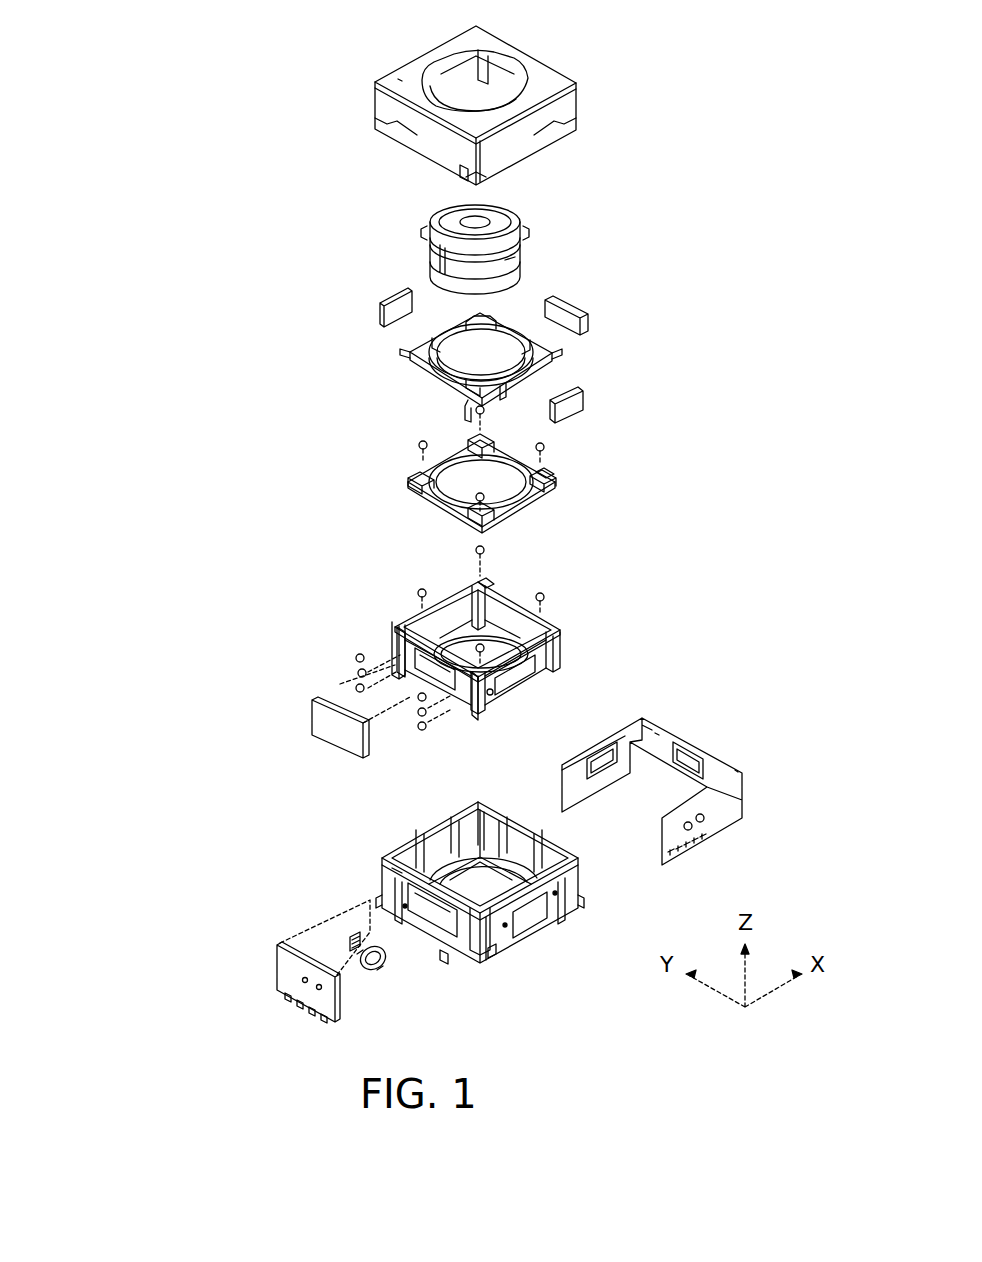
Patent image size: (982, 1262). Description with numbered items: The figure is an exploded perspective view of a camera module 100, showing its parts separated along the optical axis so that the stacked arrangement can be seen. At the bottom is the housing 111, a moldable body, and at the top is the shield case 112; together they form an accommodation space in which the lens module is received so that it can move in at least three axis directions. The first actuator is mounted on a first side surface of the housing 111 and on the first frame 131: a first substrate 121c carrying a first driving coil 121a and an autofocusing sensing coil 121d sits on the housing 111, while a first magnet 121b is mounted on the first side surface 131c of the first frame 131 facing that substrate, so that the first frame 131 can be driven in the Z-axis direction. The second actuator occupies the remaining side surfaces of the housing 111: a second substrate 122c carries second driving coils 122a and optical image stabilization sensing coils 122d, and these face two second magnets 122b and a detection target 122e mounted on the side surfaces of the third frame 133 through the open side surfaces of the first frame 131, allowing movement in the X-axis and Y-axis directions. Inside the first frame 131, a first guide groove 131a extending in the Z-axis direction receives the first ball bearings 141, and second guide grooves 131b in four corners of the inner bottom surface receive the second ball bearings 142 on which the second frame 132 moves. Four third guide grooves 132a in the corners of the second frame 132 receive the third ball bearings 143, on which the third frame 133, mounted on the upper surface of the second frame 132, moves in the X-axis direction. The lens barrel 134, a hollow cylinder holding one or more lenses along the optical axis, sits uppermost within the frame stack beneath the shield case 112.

The camera module 100 is at (762, 187).
The housing 111 is at (503, 935).
The shield case 112 is at (392, 114).
The first driving coil 121a is at (378, 972).
The first magnet 121b is at (330, 737).
The first substrate 121c is at (277, 950).
The autofocusing (AF) sensing coil 121d is at (350, 940).
The second driving coil 122a is at (642, 718).
The second magnet 122b is at (562, 325).
The second substrate 122c is at (575, 798).
The optical image stabilization (OIS) sensing coil 122d is at (703, 832).
The detection target 122e is at (587, 402).
The first frame 131 is at (566, 643).
The first guide groove 131a is at (466, 714).
The second guide groove 131b is at (502, 588).
The first side surface of the first frame 131c is at (414, 688).
The second frame 132 is at (558, 488).
The third guide groove 132a is at (552, 474).
The third frame 133 is at (437, 372).
The lens barrel 134 is at (432, 266).
The first ball bearing 141 is at (355, 658).
The second ball bearing 142 is at (420, 590).
The third ball bearing 143 is at (419, 442).